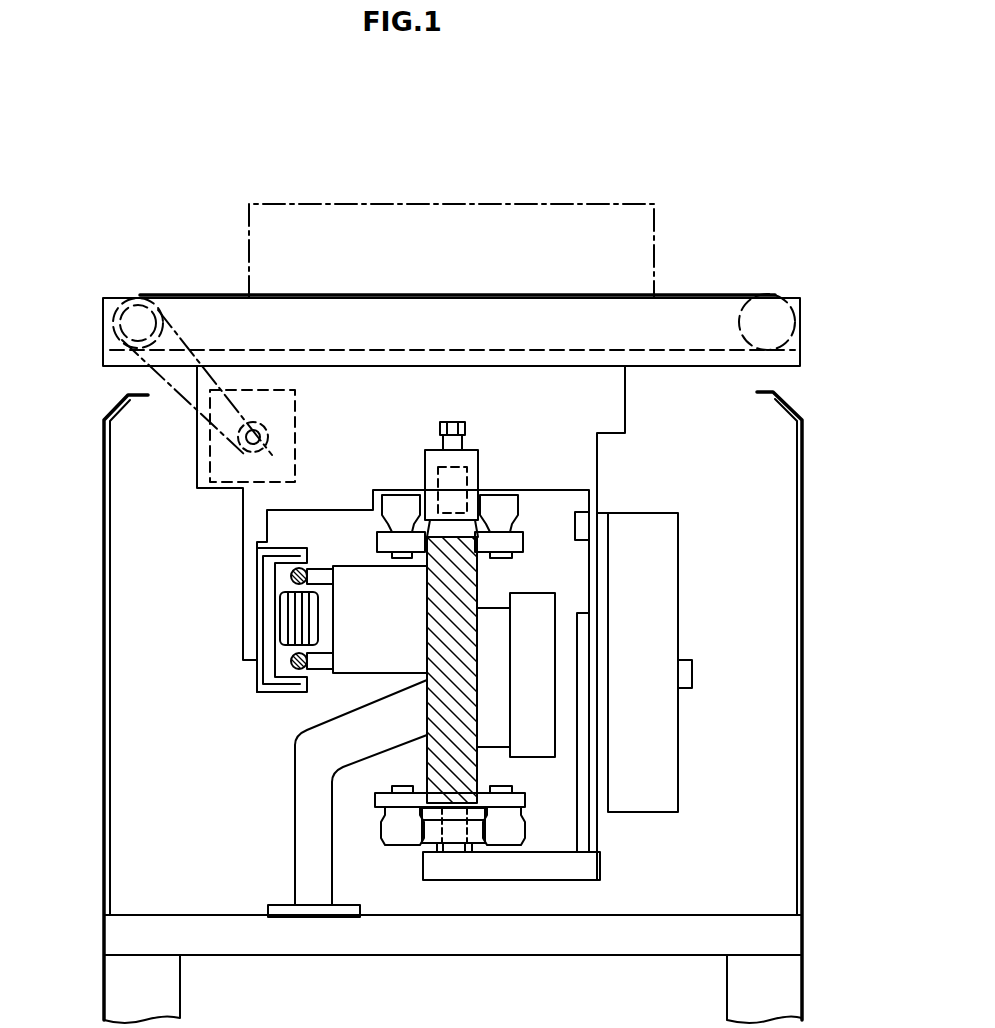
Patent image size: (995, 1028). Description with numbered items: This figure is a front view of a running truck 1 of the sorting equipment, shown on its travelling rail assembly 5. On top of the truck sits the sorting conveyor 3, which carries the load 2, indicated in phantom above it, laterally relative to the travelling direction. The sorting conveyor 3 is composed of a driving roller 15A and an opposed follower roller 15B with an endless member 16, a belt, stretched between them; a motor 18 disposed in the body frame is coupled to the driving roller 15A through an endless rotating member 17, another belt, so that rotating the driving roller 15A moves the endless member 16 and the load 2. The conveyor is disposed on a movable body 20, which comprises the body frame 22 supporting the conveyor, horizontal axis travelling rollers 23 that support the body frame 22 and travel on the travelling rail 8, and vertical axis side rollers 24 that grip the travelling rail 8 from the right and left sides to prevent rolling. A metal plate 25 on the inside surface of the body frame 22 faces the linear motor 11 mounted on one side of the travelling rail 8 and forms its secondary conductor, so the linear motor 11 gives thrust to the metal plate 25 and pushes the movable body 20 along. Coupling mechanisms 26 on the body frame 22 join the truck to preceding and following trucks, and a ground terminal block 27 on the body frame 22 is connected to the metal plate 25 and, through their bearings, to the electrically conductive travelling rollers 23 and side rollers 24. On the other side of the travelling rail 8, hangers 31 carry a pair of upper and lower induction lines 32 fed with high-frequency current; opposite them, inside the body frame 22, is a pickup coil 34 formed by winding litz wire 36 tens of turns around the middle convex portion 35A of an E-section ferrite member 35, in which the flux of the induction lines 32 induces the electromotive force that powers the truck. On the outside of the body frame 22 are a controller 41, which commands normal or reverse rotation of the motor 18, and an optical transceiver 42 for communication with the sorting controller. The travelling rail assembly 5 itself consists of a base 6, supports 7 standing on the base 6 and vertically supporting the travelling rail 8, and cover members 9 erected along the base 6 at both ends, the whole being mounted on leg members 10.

The running truck 1 is at (693, 230).
The load 2 is at (592, 205).
The sorting conveyor 3 is at (793, 292).
The travelling rail assembly 5 is at (808, 548).
The base 6 is at (456, 932).
The support 7 is at (307, 846).
The travelling rail 8 is at (428, 762).
The cover member 9 is at (104, 770).
The leg member 10 is at (115, 995).
The linear motor 11 is at (532, 745).
The driving roller 15A is at (116, 333).
The follower roller 15B is at (790, 325).
The endless member 16 is at (714, 292).
The endless rotating member 17 is at (172, 385).
The motor 18 is at (210, 458).
The movable body 20 is at (636, 425).
The body frame 22 is at (597, 480).
The horizontal axis travelling roller 23 is at (455, 485).
The vertical axis side roller 24 is at (521, 543).
The metal plate 25 is at (582, 745).
The coupling mechanism 26 is at (464, 441).
The ground terminal block 27 is at (582, 520).
The hanger 31 is at (378, 645).
The induction line 32 is at (306, 572).
The pickup coil 34 is at (248, 688).
The ferrite member 35 is at (290, 690).
The middle convex portion 35A is at (318, 672).
The litz wire 36 is at (280, 622).
The controller 41 is at (648, 800).
The optical transceiver 42 is at (692, 665).